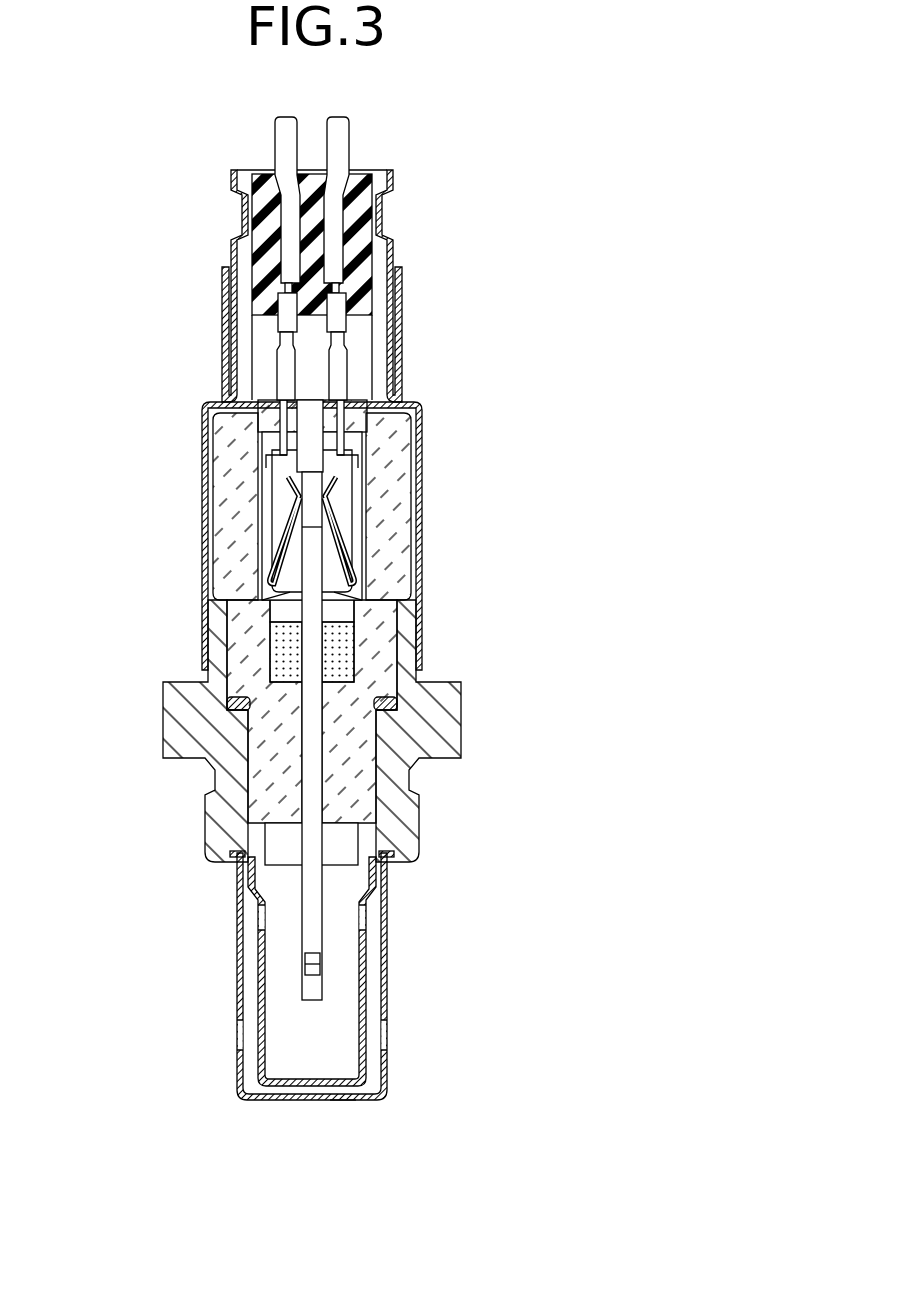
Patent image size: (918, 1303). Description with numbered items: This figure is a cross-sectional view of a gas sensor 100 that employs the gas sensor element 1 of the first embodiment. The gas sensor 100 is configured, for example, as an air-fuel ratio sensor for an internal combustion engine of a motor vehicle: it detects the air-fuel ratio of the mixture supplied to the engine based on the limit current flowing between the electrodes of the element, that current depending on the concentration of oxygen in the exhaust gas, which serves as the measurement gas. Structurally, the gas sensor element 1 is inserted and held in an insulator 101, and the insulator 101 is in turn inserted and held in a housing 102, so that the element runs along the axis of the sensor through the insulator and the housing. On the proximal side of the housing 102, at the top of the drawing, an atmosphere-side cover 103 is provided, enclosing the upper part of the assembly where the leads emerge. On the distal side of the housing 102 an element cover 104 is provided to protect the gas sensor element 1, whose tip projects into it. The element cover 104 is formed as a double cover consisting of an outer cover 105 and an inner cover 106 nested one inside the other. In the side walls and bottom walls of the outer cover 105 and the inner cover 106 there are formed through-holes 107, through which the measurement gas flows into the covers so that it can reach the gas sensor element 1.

The gas sensor 100 is at (333, 647).
The gas sensor element 1 is at (312, 963).
The insulator 101 is at (233, 660).
The housing 102 is at (432, 712).
The atmosphere-side cover 103 is at (203, 482).
The element cover 104 is at (237, 898).
The outer cover 105 is at (343, 1102).
The inner cover 106 is at (365, 1058).
The through-holes 107 is at (237, 1035).